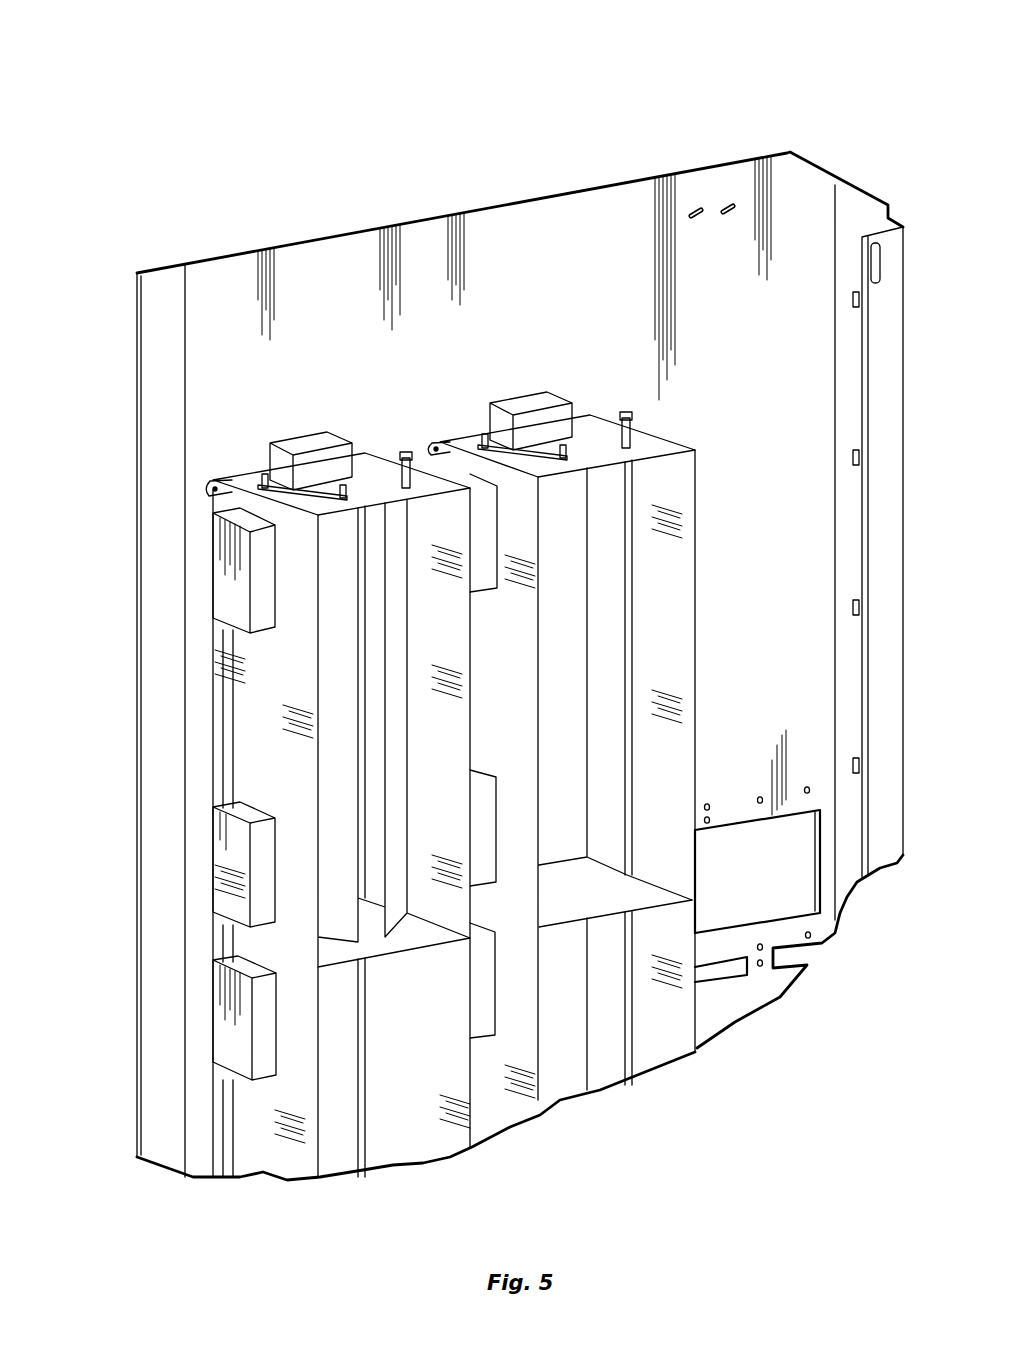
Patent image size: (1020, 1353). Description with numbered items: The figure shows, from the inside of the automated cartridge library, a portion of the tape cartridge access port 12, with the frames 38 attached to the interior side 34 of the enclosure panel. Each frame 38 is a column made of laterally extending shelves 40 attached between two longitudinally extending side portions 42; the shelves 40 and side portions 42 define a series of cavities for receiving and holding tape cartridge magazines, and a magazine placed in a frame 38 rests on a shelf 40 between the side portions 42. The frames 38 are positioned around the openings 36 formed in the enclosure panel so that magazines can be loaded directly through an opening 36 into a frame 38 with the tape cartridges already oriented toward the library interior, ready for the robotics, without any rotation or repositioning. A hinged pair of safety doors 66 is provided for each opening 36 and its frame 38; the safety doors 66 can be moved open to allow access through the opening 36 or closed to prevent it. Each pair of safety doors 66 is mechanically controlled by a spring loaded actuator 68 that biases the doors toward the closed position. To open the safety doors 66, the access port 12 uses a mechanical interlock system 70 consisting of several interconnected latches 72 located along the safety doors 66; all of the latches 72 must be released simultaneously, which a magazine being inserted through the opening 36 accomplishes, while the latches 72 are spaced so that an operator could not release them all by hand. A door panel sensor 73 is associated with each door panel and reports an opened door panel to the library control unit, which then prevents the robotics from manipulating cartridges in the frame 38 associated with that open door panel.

The tape cartridge access port 12 is at (717, 103).
The interior side 34 is at (528, 228).
The opening 36 is at (582, 613).
The frame 38 is at (362, 450).
The shelf 40 is at (427, 932).
The side portion 42 is at (455, 685).
The safety door 66 is at (672, 660).
The spring loaded actuator 68 is at (318, 488).
The mechanical interlock system 70 is at (240, 717).
The latch 72 is at (265, 608).
The door panel sensor 73 is at (305, 442).